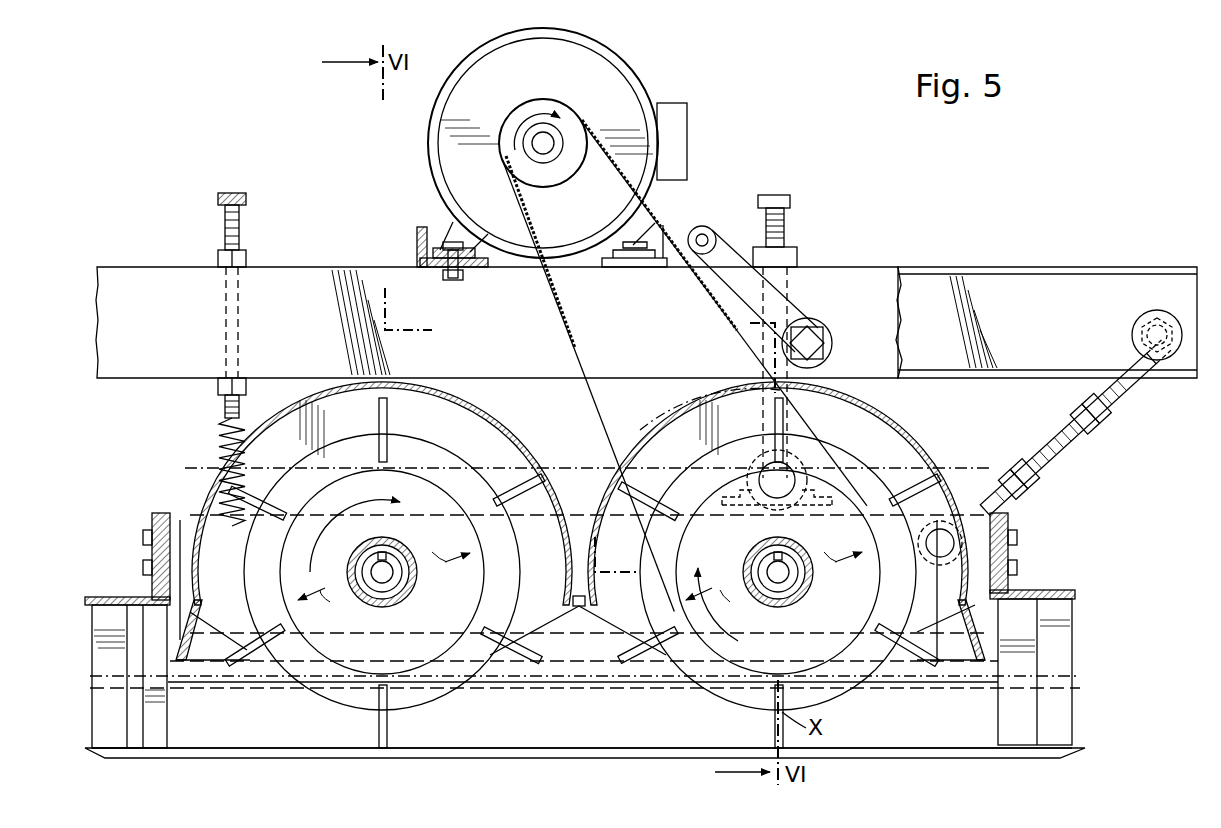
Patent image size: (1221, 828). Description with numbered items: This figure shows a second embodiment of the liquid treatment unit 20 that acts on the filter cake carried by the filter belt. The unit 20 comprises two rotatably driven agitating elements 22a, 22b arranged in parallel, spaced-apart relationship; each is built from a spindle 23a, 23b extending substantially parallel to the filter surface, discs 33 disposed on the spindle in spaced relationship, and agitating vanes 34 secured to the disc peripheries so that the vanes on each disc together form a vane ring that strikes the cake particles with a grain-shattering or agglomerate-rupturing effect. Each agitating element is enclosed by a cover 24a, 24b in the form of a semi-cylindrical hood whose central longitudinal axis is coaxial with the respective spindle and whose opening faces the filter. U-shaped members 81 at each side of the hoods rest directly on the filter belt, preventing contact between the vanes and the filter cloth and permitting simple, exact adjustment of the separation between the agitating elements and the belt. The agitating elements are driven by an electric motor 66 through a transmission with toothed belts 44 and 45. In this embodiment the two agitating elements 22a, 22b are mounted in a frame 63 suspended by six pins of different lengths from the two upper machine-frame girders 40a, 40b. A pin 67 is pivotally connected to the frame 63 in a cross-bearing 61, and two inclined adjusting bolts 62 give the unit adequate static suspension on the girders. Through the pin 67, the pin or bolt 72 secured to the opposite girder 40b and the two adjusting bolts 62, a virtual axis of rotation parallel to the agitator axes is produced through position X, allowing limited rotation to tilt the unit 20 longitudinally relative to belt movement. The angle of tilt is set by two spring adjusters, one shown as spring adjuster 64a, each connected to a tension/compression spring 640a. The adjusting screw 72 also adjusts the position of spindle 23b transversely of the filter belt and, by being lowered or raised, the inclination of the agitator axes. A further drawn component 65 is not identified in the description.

The liquid treatment unit 20 is at (1062, 506).
The agitating element 22a is at (357, 585).
The agitating element 22b is at (778, 589).
The spindle 23a is at (398, 595).
The spindle 23b is at (796, 590).
The cover 24a is at (497, 422).
The cover 24b is at (905, 428).
The disc 33 is at (440, 688).
The agitating vane 34 is at (388, 726).
The machine-frame girder 40a is at (312, 277).
The machine-frame girder 40b is at (1022, 277).
The toothed belt 44 is at (572, 320).
The toothed belt 45 is at (579, 466).
The cross-bearing 61 is at (768, 492).
The adjusting bolt 62 is at (1035, 436).
The frame 63 is at (120, 596).
The spring adjuster 64a is at (217, 240).
The tension/compression spring 640a is at (222, 446).
The tensioning arm 65 is at (744, 238).
The electric motor 66 is at (640, 85).
The pin 67 is at (783, 283).
The adjusting screw 72 is at (776, 198).
The U-shaped member 81 is at (555, 746).